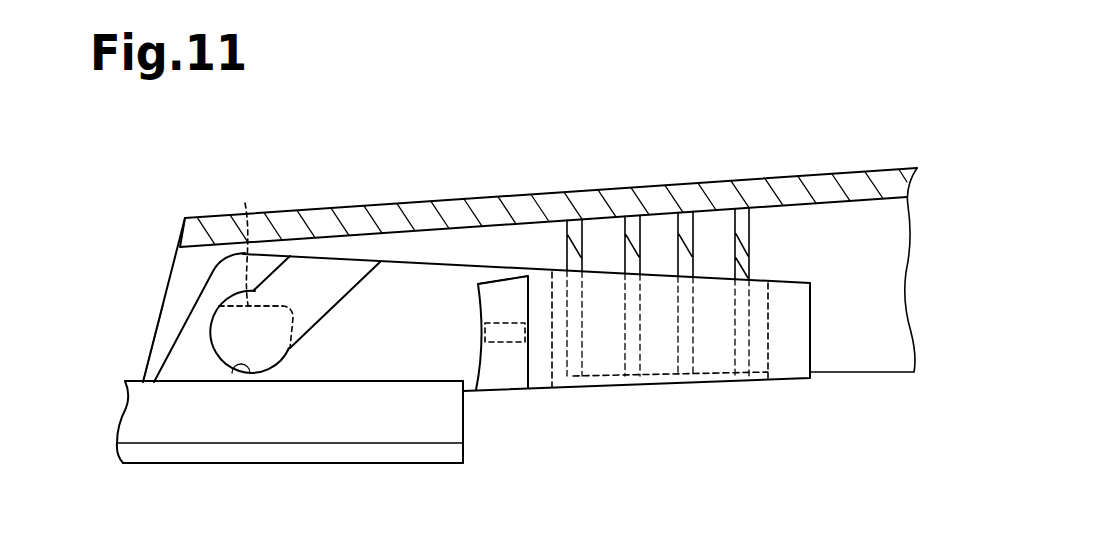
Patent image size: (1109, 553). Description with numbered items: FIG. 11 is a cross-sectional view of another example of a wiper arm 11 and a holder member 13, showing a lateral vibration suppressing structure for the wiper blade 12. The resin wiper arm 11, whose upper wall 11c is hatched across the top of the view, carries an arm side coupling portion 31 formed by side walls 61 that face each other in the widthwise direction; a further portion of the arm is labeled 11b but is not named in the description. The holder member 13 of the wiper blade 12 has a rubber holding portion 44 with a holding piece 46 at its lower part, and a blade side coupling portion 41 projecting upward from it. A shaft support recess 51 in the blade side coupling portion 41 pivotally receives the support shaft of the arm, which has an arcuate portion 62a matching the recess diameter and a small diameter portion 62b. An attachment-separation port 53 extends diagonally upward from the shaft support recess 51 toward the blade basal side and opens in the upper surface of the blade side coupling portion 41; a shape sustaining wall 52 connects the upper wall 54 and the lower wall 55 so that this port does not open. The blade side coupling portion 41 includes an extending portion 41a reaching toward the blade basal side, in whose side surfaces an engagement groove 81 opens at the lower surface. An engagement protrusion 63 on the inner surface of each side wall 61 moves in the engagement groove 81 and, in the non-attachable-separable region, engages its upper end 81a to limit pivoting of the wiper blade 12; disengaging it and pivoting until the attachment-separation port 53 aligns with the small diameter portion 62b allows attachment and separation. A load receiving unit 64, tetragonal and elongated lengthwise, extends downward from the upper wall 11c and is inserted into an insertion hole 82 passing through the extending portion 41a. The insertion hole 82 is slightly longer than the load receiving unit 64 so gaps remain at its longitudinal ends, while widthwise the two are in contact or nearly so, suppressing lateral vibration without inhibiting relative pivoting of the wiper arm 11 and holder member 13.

The wiper arm 11 is at (788, 177).
The body rear portion 11b is at (880, 170).
The upper wall 11c is at (650, 186).
The wiper blade 12 is at (259, 444).
The holder member 13 is at (132, 415).
The arm side coupling portion 31 is at (152, 347).
The blade side coupling portion 41 is at (410, 258).
The extending portion 41a is at (807, 328).
The rubber holding portion 44 is at (293, 467).
The holding piece 46 is at (388, 433).
The shaft support recess 51 is at (243, 375).
The shape sustaining wall 52 is at (312, 270).
The attachment-separation port 53 is at (357, 275).
The upper wall 54 is at (220, 277).
The lower wall 55 is at (302, 370).
The side wall 61 is at (164, 306).
The arcuate portion 62a is at (296, 330).
The small diameter portion 62b is at (242, 240).
The engagement protrusion 63 is at (503, 343).
The load receiving unit 64 is at (750, 243).
The engagement groove 81 is at (518, 378).
The upper end 81a is at (501, 281).
The insertion hole 82 is at (768, 378).